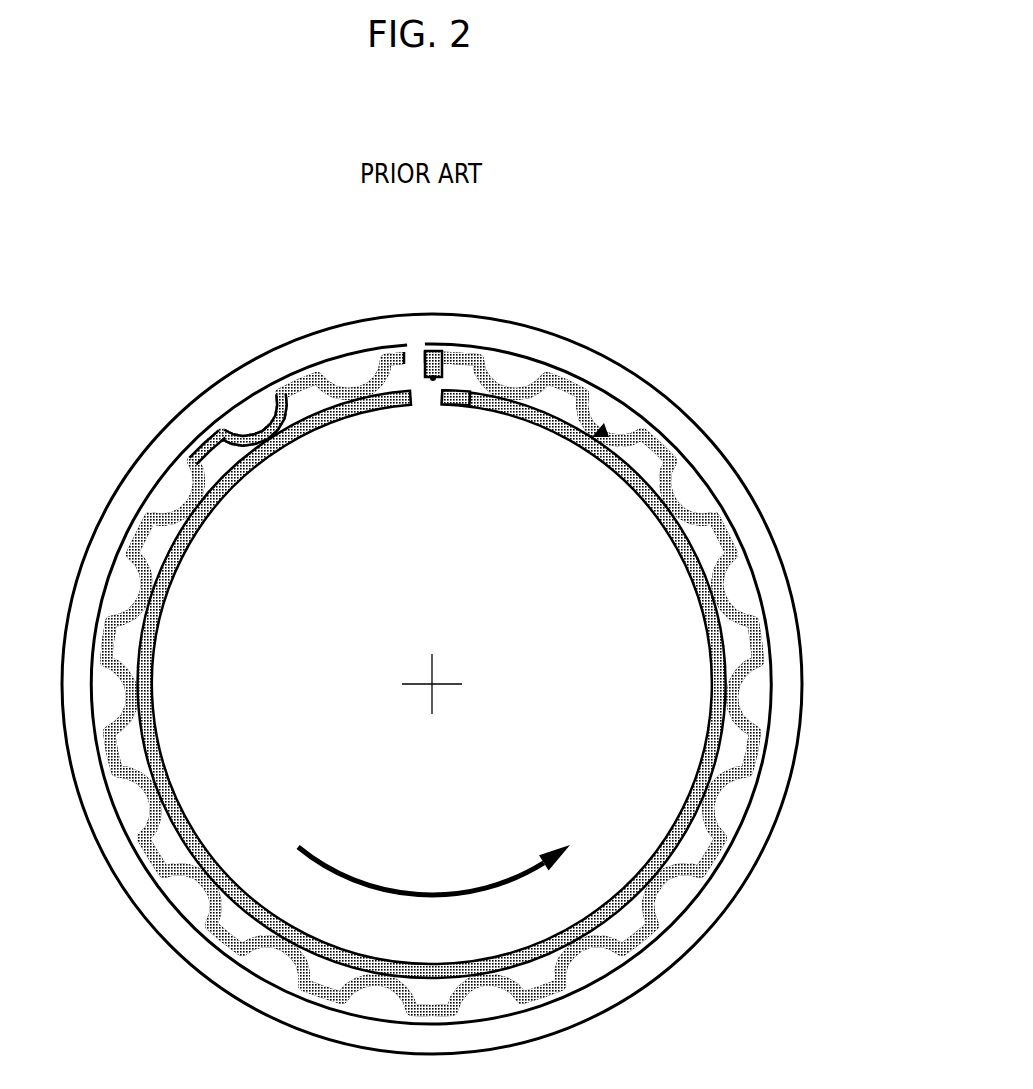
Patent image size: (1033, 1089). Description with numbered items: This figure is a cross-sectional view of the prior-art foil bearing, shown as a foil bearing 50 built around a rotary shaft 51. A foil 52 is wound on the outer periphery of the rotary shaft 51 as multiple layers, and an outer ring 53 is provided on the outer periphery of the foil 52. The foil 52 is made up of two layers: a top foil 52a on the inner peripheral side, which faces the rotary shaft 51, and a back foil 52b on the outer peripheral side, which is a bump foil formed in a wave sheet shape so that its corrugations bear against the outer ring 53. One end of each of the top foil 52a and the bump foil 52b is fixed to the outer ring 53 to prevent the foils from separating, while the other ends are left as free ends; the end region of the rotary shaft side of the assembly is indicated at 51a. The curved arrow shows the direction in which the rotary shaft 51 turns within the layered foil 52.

The foil bearing 50 is at (466, 529).
The rotary shaft 51 is at (585, 668).
The end portion of top foil 51a is at (419, 402).
The foil 52 is at (607, 427).
The top foil 52a is at (217, 480).
The back foil 52b is at (282, 395).
The outer ring 53 is at (492, 342).